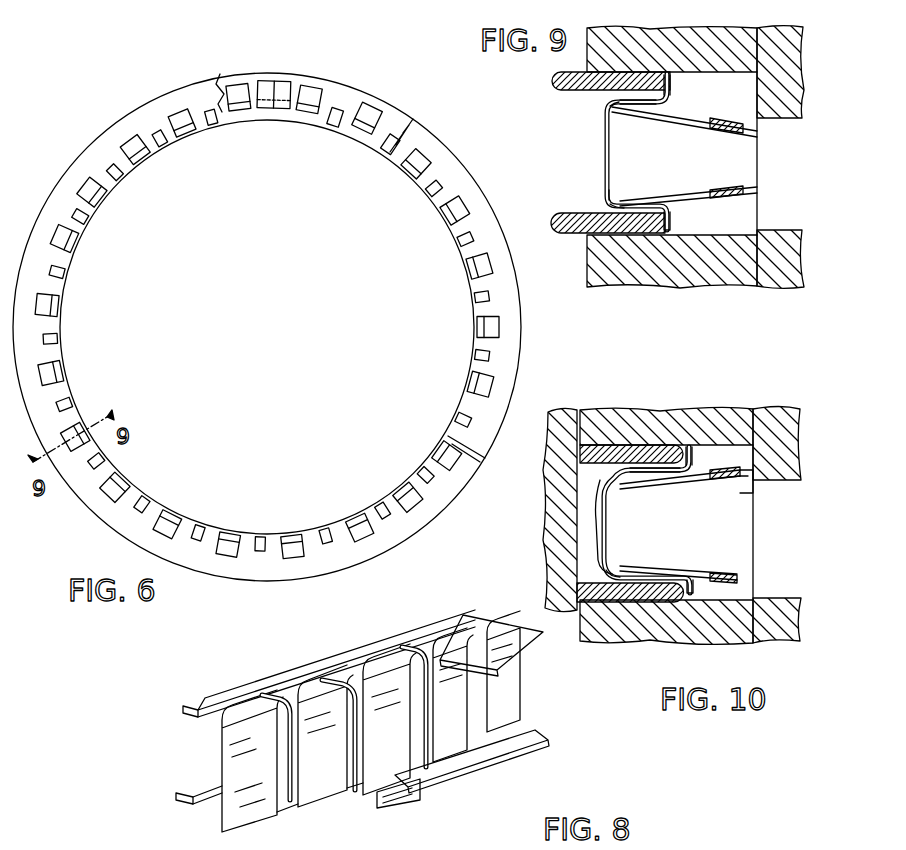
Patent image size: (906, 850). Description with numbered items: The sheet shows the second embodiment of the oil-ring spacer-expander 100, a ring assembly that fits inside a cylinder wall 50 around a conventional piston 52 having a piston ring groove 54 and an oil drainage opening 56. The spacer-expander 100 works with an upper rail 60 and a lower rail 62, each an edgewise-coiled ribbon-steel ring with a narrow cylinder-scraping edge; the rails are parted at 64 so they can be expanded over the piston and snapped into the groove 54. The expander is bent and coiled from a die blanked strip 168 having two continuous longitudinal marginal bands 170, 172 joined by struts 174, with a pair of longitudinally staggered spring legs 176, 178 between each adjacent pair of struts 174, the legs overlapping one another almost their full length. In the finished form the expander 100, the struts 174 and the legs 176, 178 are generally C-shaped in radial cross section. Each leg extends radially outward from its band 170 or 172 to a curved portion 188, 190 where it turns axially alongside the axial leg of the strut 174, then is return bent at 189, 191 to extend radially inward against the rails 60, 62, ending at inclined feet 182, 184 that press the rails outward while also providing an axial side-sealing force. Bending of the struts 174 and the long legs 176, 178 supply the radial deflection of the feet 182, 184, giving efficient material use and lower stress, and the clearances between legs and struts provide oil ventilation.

In FIG. 10, the cylinder wall 50 is at (581, 410).
In FIG. 9, the piston 52 is at (613, 36).
In FIG. 9, the piston ring groove 54 is at (748, 88).
In FIG. 9, the oil drainage opening 56 is at (757, 250).
In FIG. 6, the upper rail 60 is at (130, 121).
In FIG. 9, the upper rail 60 is at (552, 81).
In FIG. 10, the upper rail 60 is at (607, 436).
In FIG. 8, the upper rail 60 is at (523, 650).
In FIG. 6, the lower rail 62 is at (516, 322).
In FIG. 9, the lower rail 62 is at (555, 216).
In FIG. 10, the lower rail 62 is at (583, 600).
In FIG. 8, the lower rail 62 is at (520, 757).
In FIG. 6, the rail parting 64 is at (421, 134).
In FIG. 6, the spacer-expander 100 is at (414, 184).
In FIG. 9, the spacer-expander 100 is at (670, 152).
In FIG. 8, the spacer-expander 100 is at (305, 730).
In FIG. 8, the die blanked strip 168 is at (64, 844).
In FIG. 6, the upper marginal band 170 is at (338, 527).
In FIG. 9, the upper marginal band 170 is at (748, 128).
In FIG. 10, the upper marginal band 170 is at (744, 493).
In FIG. 8, the upper marginal band 170 is at (187, 712).
In FIG. 9, the lower marginal band 172 is at (746, 190).
In FIG. 10, the lower marginal band 172 is at (740, 577).
In FIG. 8, the lower marginal band 172 is at (178, 795).
In FIG. 10, the strut 174 is at (597, 510).
In FIG. 8, the strut 174 is at (433, 790).
In FIG. 9, the spring leg 176 is at (600, 160).
In FIG. 10, the spring leg 176 is at (617, 507).
In FIG. 8, the spring leg 176 is at (253, 801).
In FIG. 9, the spring leg 178 is at (688, 124).
In FIG. 10, the spring leg 178 is at (627, 550).
In FIG. 8, the spring leg 178 is at (322, 780).
In FIG. 6, the foot 182 is at (82, 426).
In FIG. 9, the foot 182 is at (673, 88).
In FIG. 10, the foot 182 is at (707, 449).
In FIG. 9, the foot 184 is at (674, 224).
In FIG. 10, the foot 184 is at (694, 596).
In FIG. 9, the curved portion 188 is at (622, 205).
In FIG. 10, the curved portion 188 is at (607, 560).
In FIG. 9, the return bend 189 is at (618, 116).
In FIG. 9, the curved portion 190 is at (610, 100).
In FIG. 10, the curved portion 190 is at (632, 490).
In FIG. 9, the return bend 191 is at (614, 192).